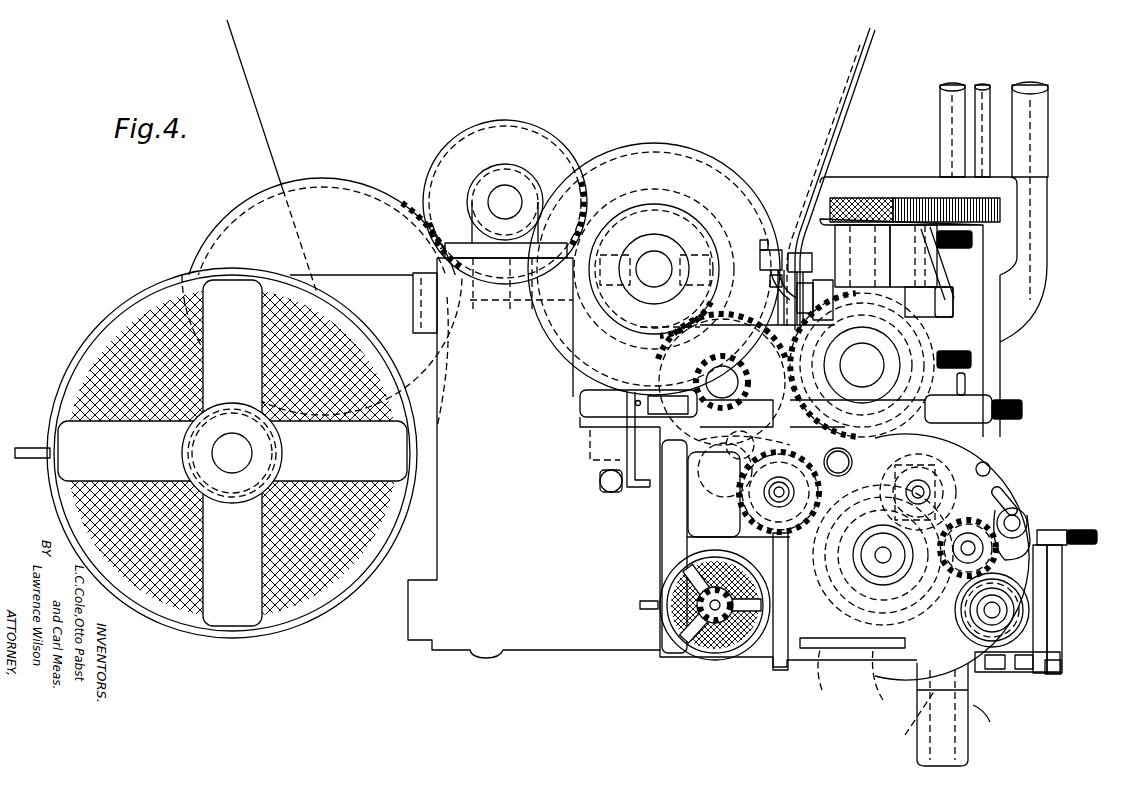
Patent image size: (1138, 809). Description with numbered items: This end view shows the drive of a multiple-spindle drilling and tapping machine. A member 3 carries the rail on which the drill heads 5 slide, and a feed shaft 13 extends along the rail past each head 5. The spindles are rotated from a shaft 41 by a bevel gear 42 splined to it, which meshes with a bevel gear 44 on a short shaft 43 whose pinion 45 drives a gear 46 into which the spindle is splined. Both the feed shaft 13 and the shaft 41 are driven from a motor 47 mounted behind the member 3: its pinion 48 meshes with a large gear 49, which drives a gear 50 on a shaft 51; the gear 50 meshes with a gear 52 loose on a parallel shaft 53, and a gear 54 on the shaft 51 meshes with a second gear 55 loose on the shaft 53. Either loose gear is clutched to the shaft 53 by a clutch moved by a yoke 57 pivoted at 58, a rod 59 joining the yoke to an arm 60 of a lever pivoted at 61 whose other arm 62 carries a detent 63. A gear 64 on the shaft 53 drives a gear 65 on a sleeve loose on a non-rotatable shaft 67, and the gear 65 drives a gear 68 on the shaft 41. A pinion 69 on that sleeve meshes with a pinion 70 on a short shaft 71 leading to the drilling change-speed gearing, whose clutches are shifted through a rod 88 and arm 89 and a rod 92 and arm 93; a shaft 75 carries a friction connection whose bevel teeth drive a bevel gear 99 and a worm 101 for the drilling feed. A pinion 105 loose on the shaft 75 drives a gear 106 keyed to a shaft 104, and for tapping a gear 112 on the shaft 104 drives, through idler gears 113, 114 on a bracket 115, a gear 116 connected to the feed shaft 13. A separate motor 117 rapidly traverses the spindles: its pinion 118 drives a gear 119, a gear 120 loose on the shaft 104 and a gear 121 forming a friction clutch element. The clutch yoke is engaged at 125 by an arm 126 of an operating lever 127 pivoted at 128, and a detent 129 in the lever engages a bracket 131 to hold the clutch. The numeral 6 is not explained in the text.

The member 3 is at (860, 62).
The drill head 5 is at (985, 358).
The base support 6 is at (987, 721).
The feed shaft 13 is at (912, 668).
The shaft 41 is at (870, 372).
The bevel gear 42 is at (830, 340).
The short shaft 43 is at (840, 252).
The bevel gear 44 is at (808, 284).
The pinion 45 is at (810, 185).
The gear 46 is at (905, 198).
The motor 47 is at (135, 300).
The pinion 48 is at (183, 450).
The large gear 49 is at (350, 183).
The gear 50 is at (483, 122).
The shaft 51 is at (495, 192).
The gear 52 is at (680, 170).
The shaft 53 is at (648, 258).
The gear 54 is at (528, 165).
The second gear 55 is at (622, 147).
The yoke 57 is at (770, 278).
The pivot 58 is at (575, 388).
The rod 59 is at (634, 448).
The arm 60 is at (630, 490).
The pivot 61 is at (775, 403).
The arm 62 is at (985, 440).
The detent 63 is at (1024, 406).
The gear 64 is at (690, 210).
The gear 65 is at (745, 325).
The non-rotatable shaft 67 is at (735, 372).
The gear 68 is at (955, 395).
The pinion 69 is at (735, 352).
The pinion 70 is at (718, 477).
The short shaft 71 is at (770, 440).
The shaft 75 is at (730, 488).
The rod 88 is at (775, 250).
The arm 89 is at (930, 336).
The rod 92 is at (770, 243).
The arm 93 is at (942, 272).
The bevel gear 99 is at (760, 525).
The worm 101 is at (905, 462).
The shaft 104 is at (882, 565).
The pinion 105 is at (745, 505).
The gear 106 is at (807, 680).
The gear 112 is at (965, 575).
The idler gear 113 is at (990, 470).
The idler gear 114 is at (1028, 520).
The bracket 115 is at (1014, 496).
The gear 116 is at (1030, 590).
The separate motor 117 is at (660, 620).
The pinion 118 is at (688, 652).
The gear 119 is at (795, 665).
The gear 120 is at (876, 685).
The gear 121 is at (906, 719).
The engagement point 125 is at (1000, 685).
The arm 126 is at (1020, 675).
The operating lever 127 is at (1062, 572).
The pivot 128 is at (1062, 665).
The detent 129 is at (1075, 528).
The bracket 131 is at (1050, 600).